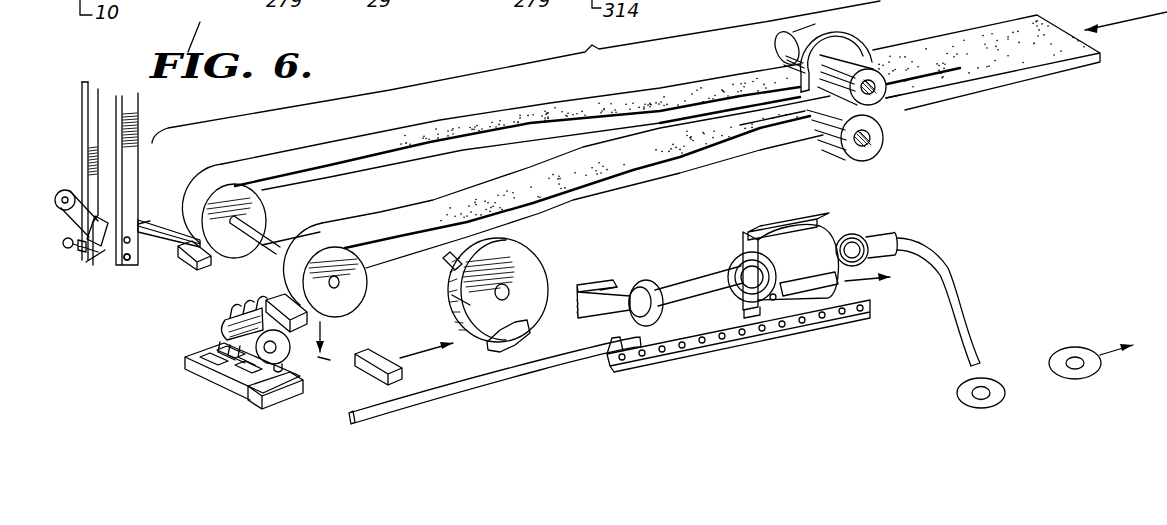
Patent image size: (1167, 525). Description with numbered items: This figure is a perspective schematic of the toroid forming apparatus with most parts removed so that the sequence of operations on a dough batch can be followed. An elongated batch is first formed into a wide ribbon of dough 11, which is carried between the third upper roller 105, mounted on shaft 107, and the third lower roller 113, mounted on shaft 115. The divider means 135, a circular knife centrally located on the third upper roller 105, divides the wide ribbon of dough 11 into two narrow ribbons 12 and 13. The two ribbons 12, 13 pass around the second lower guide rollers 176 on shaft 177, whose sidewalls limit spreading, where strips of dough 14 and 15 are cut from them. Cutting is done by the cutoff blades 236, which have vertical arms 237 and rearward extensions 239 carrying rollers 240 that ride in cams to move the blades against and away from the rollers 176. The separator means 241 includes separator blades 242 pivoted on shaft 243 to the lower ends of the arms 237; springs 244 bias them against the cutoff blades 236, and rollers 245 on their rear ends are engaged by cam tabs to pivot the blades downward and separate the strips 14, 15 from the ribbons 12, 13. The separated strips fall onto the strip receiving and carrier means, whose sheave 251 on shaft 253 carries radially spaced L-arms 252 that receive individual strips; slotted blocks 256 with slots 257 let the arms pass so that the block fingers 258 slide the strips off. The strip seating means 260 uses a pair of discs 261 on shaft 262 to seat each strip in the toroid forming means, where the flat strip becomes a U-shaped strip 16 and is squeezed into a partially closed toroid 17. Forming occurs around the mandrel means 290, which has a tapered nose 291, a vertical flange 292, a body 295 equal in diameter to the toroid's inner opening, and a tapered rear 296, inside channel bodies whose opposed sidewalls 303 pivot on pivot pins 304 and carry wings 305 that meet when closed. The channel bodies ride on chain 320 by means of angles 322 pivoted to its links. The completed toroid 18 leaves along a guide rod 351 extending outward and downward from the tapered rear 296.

The wide ribbon of dough 11 is at (1043, 70).
The ribbon of dough 12 is at (758, 122).
The ribbon of dough 13 is at (743, 80).
The strip of dough 14 is at (278, 296).
The strip of dough 15 is at (190, 263).
The U-shaped strip 16 is at (499, 346).
The partially closed toroid 17 is at (655, 316).
The completed toroid 18 is at (857, 232).
The third upper roller 105 is at (786, 45).
The shaft 107 is at (886, 82).
The third lower roller 113 is at (873, 122).
The shaft 115 is at (870, 141).
The divider means 135 is at (870, 32).
The second lower guide roller 176 is at (255, 206).
The shaft 177 is at (322, 215).
The cutoff blade 236 is at (143, 228).
The vertical arm 237 is at (90, 99).
The extension 239 is at (88, 186).
The roller 240 is at (52, 195).
The separator means 241 is at (103, 266).
The separator blade 242 is at (152, 250).
The shaft 243 is at (127, 260).
The spring 244 is at (106, 255).
The roller 245 is at (63, 249).
The sheave 251 is at (230, 322).
The L-arm 252 is at (239, 304).
The shaft 253 is at (318, 360).
The slotted block 256 is at (190, 368).
The slot 257 is at (293, 373).
The block finger 258 is at (277, 361).
The strip seating means 260 is at (537, 242).
The disc 261 is at (527, 268).
The shaft 262 is at (494, 292).
The mandrel means 290 is at (607, 323).
The tapered nose 291 is at (577, 318).
The vertical flange 292 is at (615, 281).
The body 295 is at (713, 270).
The tapered rear 296 is at (895, 230).
The sidewall 303 is at (734, 250).
The pivot pin 304 is at (803, 300).
The wing 305 is at (770, 208).
The chain 320 is at (705, 347).
The angle 322 is at (768, 320).
The guide rod 351 is at (954, 273).